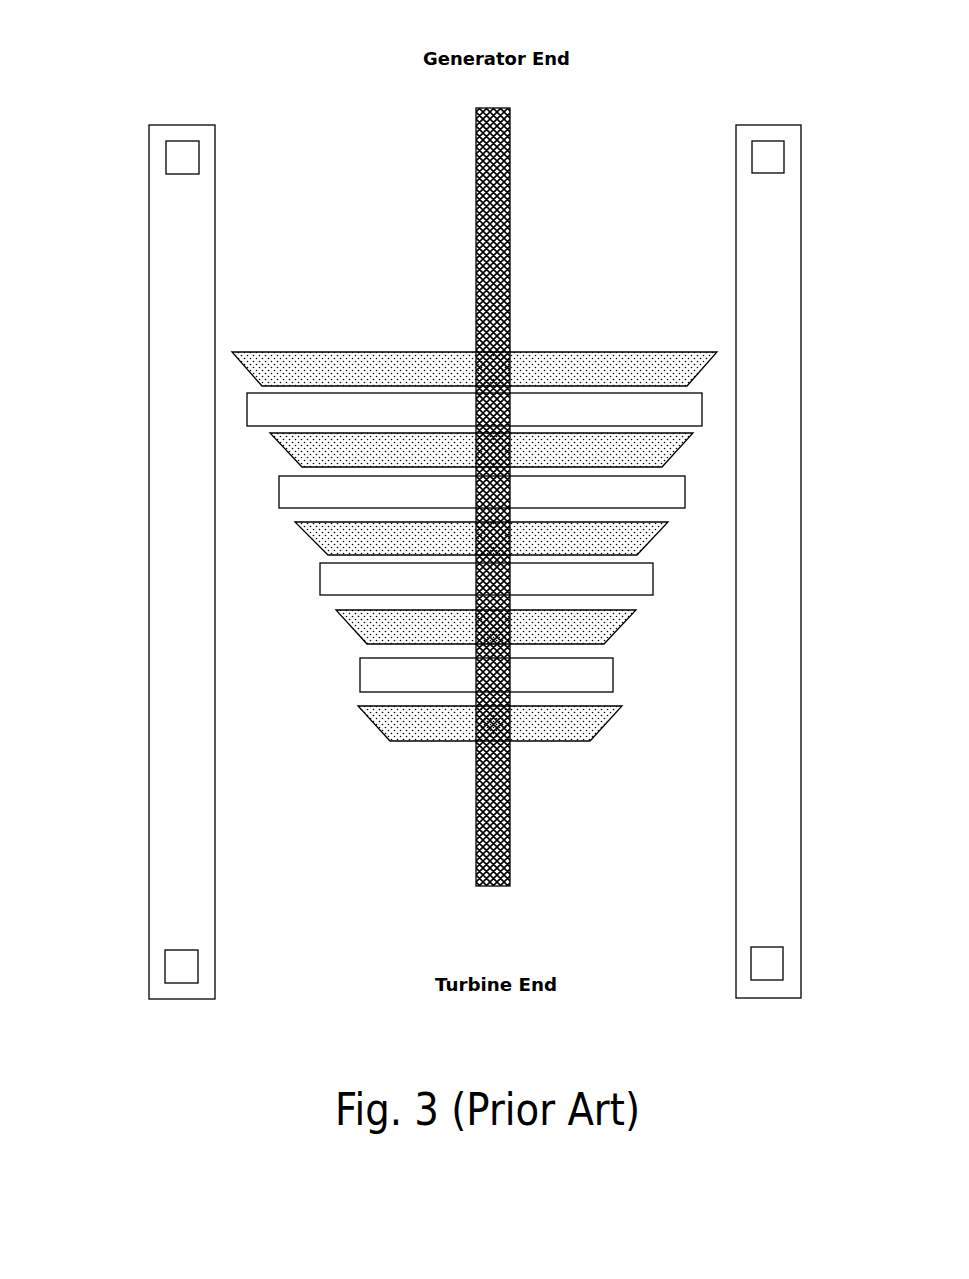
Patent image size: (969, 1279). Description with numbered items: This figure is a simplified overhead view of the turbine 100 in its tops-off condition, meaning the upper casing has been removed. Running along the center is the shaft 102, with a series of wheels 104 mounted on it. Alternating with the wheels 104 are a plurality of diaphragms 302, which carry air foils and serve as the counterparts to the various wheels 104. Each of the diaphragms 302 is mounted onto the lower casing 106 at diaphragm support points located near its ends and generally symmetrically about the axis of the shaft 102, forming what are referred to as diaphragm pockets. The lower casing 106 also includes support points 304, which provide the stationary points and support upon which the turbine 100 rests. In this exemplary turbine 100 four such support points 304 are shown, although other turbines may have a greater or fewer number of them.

The turbine 100 is at (201, 22).
The shaft 102 is at (477, 200).
The wheels 104 is at (308, 537).
The diaphragms 302 is at (686, 510).
The lower casing 106 is at (213, 853).
The support points 304 is at (166, 152).